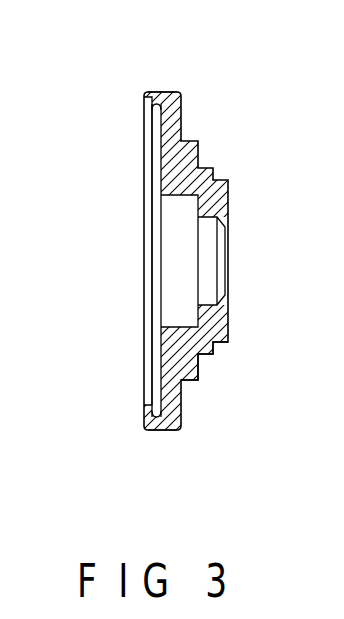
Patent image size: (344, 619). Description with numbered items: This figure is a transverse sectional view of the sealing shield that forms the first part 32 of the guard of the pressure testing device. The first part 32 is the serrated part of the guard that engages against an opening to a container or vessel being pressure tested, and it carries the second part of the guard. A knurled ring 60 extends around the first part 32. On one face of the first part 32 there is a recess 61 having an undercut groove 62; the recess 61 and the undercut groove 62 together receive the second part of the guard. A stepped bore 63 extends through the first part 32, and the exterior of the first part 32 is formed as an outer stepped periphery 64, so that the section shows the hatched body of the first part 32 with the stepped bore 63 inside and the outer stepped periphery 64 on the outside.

The first part of the guard 32 is at (225, 133).
The knurled ring 60 is at (163, 92).
The recess 61 is at (138, 170).
The undercut groove 62 is at (157, 418).
The stepped bore 63 is at (184, 261).
The outer stepped periphery 64 is at (203, 360).